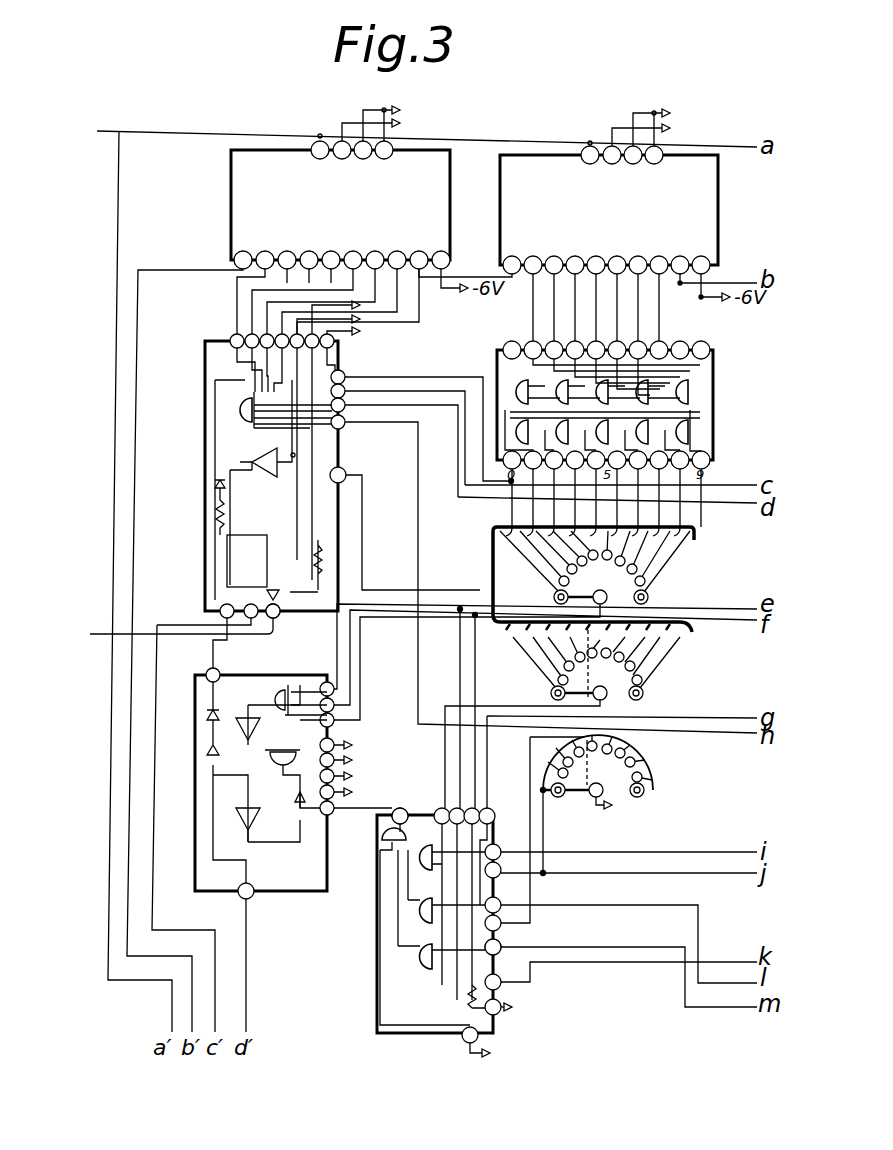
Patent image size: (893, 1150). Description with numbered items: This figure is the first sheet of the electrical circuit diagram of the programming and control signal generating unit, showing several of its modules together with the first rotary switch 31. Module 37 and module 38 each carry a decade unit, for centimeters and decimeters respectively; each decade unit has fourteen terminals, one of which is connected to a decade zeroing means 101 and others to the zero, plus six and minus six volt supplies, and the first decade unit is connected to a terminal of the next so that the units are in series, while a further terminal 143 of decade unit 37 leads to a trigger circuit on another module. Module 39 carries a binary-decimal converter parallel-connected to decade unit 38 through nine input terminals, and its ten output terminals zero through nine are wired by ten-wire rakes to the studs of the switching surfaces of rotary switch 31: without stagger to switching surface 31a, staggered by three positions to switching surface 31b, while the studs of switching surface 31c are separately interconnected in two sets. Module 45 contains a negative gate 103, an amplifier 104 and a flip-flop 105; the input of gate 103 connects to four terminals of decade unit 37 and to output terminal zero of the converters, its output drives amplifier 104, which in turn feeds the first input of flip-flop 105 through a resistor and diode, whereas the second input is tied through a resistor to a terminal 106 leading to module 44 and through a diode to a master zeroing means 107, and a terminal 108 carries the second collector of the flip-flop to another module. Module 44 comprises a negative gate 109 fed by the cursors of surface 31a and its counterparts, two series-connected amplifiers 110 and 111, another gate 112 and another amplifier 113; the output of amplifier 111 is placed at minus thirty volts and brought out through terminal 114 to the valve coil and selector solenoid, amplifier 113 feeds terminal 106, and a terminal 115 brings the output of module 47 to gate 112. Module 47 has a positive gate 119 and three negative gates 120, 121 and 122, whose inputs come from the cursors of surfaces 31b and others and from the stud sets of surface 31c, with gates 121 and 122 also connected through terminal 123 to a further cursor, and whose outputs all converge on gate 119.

The decade zeroing means 101 is at (97, 131).
The further terminal of decade unit 37 143 is at (233, 263).
The module 37 is at (352, 210).
The module 38 is at (619, 215).
The module 39 is at (716, 400).
The negative gate 103 is at (240, 402).
The amplifier 104 is at (268, 476).
The flip-flop 105 is at (260, 565).
The module 45 is at (303, 456).
The terminal 106 is at (344, 470).
The master zeroing means 107 is at (90, 634).
The terminal 108 is at (276, 625).
The rotary switch 31 is at (590, 701).
The switching surface 31a is at (604, 587).
The switching surface 31b is at (624, 687).
The switching surface 31c is at (620, 781).
The negative gate 109 is at (284, 691).
The amplifier 110 is at (256, 735).
The amplifier 111 is at (256, 826).
The gate 112 is at (289, 779).
The amplifier 113 is at (213, 780).
The module 44 is at (296, 779).
The terminal 114 is at (250, 898).
The terminal 115 is at (396, 826).
The positive gate 119 is at (380, 845).
The negative gate 120 is at (425, 872).
The negative gate 121 is at (425, 925).
The negative gate 122 is at (425, 971).
The terminal 123 is at (503, 941).
The module 47 is at (438, 936).